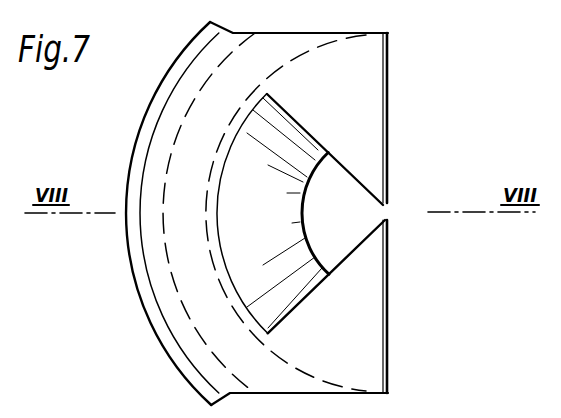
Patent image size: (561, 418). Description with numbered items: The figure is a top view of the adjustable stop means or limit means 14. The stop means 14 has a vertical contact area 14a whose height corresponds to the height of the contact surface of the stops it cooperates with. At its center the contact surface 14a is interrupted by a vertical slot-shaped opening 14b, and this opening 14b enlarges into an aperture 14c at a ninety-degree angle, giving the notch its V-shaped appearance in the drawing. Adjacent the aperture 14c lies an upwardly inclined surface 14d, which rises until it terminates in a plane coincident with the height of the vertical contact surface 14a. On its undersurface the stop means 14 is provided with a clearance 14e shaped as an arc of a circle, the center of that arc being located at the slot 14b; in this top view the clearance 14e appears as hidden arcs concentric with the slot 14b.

The stop means 14 is at (163, 123).
The vertical contact area 14a is at (385, 85).
The vertical slot-shaped opening 14b is at (384, 212).
The aperture 14c is at (352, 238).
The upwardly inclined surface 14d is at (293, 142).
The clearance 14e is at (165, 185).